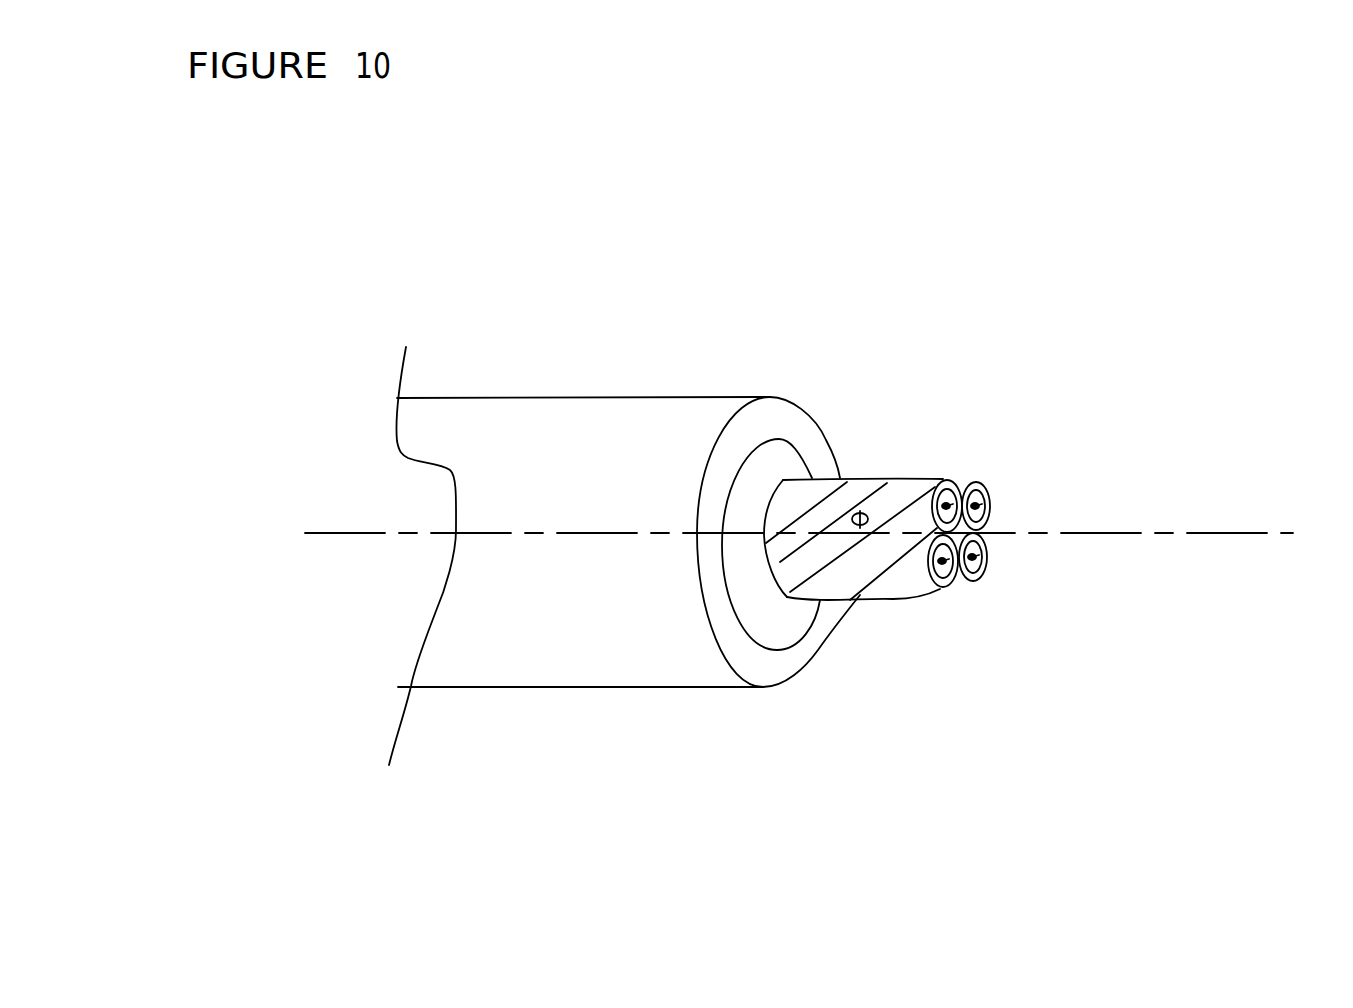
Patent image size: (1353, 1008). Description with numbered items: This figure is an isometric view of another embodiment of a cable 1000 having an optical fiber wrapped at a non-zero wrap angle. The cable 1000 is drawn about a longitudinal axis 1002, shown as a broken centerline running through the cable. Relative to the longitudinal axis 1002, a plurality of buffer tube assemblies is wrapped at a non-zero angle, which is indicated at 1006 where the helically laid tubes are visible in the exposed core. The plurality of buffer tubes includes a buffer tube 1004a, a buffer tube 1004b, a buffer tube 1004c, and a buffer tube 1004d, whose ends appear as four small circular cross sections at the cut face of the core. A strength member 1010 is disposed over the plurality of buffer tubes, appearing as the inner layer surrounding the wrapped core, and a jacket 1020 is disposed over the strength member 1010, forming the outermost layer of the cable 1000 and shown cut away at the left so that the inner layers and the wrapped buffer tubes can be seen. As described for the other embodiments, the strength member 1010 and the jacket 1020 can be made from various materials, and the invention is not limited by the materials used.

The cable 1000 is at (1192, 161).
The longitudinal axis 1002 is at (1210, 533).
The buffer tube 1004a is at (920, 582).
The buffer tube 1004b is at (963, 582).
The buffer tube 1004c is at (972, 482).
The buffer tube 1004d is at (903, 518).
The wrap angle 1006 is at (879, 499).
The strength member 1010 is at (776, 614).
The jacket 1020 is at (530, 645).